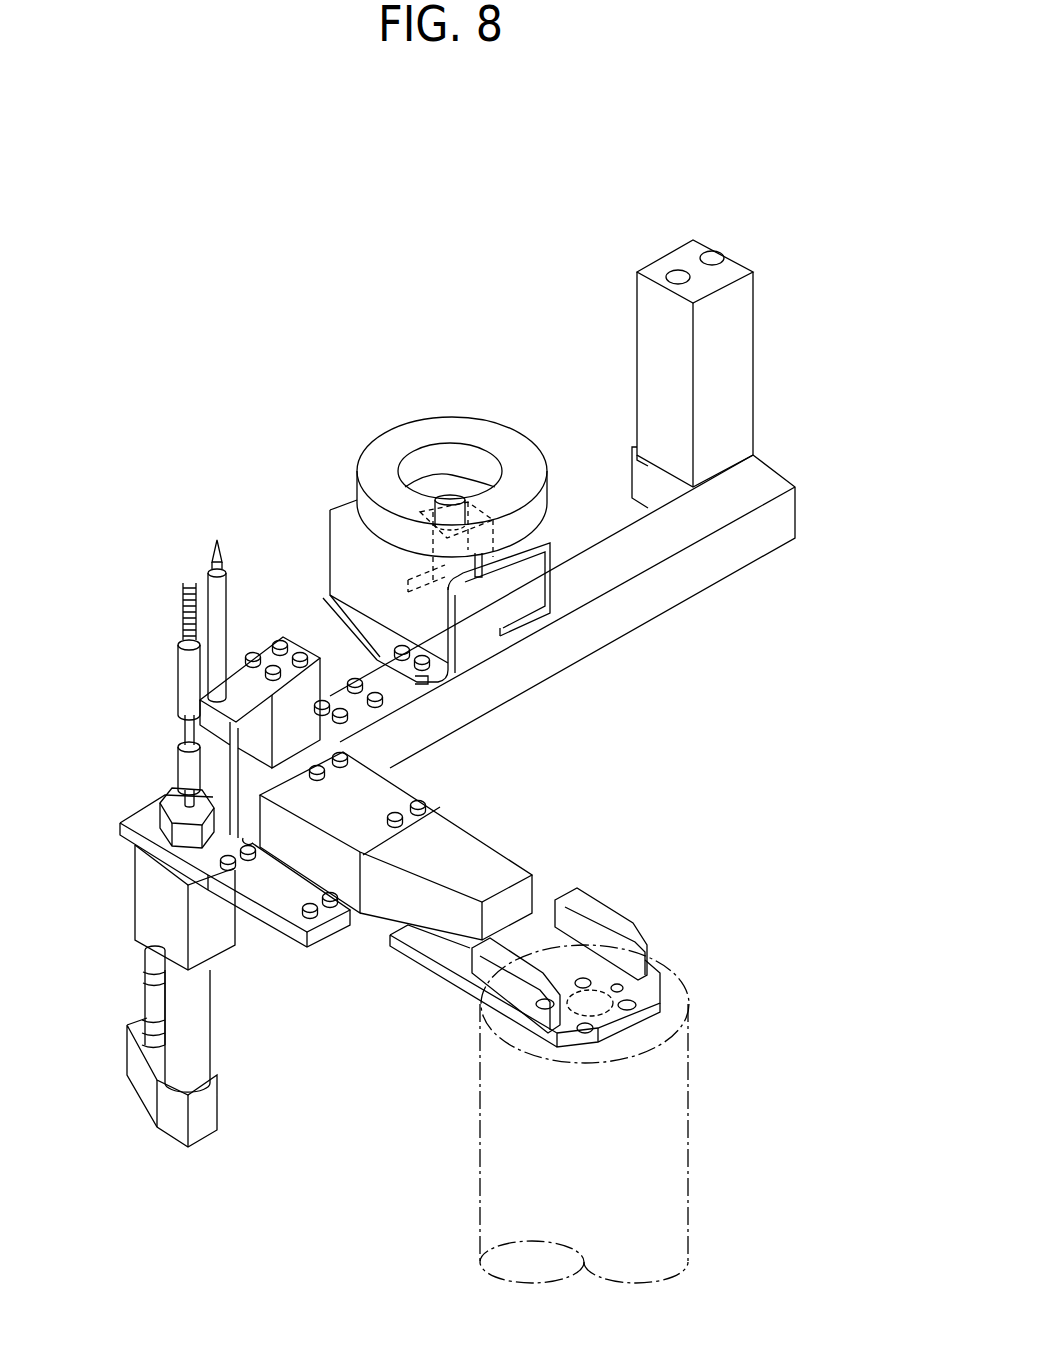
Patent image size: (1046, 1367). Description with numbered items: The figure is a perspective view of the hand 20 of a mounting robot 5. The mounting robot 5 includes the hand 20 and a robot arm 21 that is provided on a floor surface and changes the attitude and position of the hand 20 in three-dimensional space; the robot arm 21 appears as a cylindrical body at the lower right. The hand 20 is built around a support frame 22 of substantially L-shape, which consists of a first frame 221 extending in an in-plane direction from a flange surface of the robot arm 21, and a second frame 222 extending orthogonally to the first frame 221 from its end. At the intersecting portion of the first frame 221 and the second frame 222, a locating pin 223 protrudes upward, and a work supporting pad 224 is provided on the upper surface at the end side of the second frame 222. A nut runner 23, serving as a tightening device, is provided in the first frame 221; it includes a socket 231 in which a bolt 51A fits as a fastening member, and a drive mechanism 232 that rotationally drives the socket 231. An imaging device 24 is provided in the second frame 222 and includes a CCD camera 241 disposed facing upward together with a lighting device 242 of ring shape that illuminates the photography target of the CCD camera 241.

The mounting robot 5 is at (246, 240).
The hand 20 is at (468, 272).
The robot arm 21 is at (470, 1165).
The support frame 22 is at (555, 748).
The first frame 221 is at (458, 855).
The second frame 222 is at (420, 735).
The locating pin 223 is at (223, 602).
The work supporting pad 224 is at (735, 332).
The nut runner 23 is at (172, 732).
The socket 231 is at (185, 679).
The drive mechanism 232 is at (145, 900).
The imaging device 24 is at (540, 347).
The CCD camera 241 is at (450, 495).
The lighting device 242 is at (500, 440).
The bolt 51A is at (180, 613).